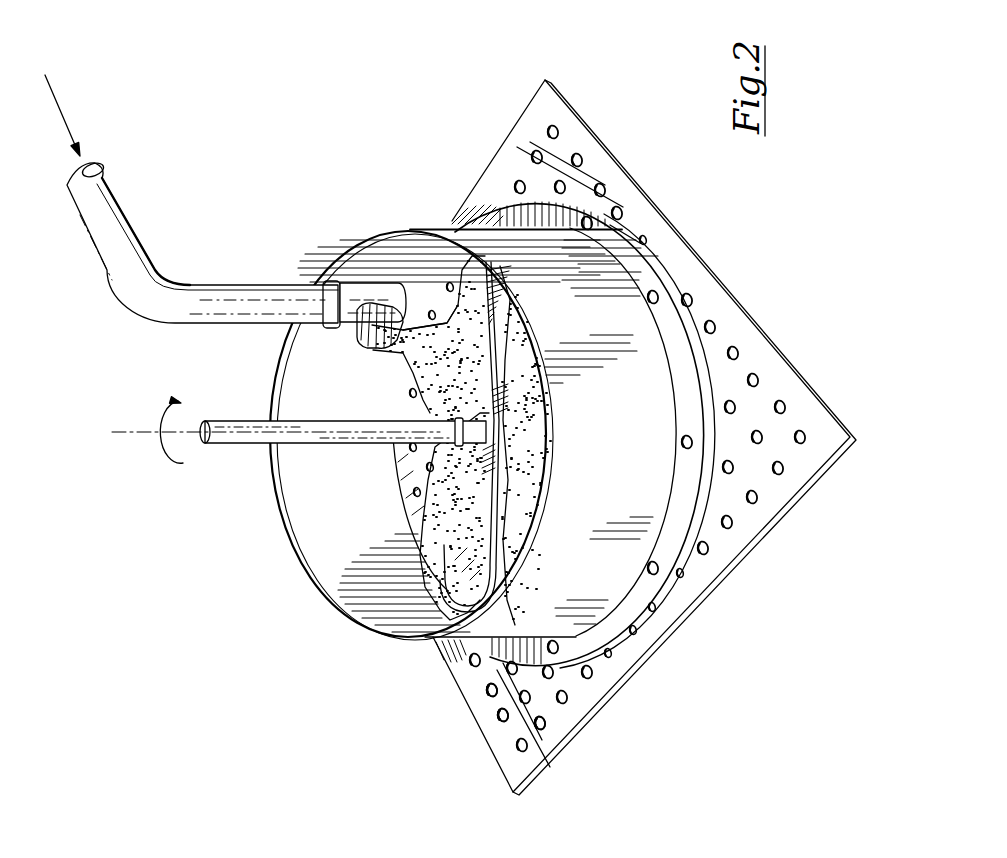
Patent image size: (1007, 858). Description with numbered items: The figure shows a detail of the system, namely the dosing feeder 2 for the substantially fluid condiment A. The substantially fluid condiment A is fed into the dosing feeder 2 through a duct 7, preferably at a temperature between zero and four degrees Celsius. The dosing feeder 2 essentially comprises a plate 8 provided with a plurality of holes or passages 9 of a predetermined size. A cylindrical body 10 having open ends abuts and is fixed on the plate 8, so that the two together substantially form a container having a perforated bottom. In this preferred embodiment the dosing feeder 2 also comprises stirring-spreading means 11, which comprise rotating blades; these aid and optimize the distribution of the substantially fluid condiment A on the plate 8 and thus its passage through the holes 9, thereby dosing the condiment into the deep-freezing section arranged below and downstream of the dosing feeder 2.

The dosing feeder 2 is at (315, 632).
The duct 7 is at (253, 297).
The plate 8 is at (520, 140).
The holes or passages 9 is at (535, 724).
The cylindrical body 10 is at (637, 472).
The stirring-spreading means 11 is at (250, 438).
The substantially fluid condiment A is at (433, 322).